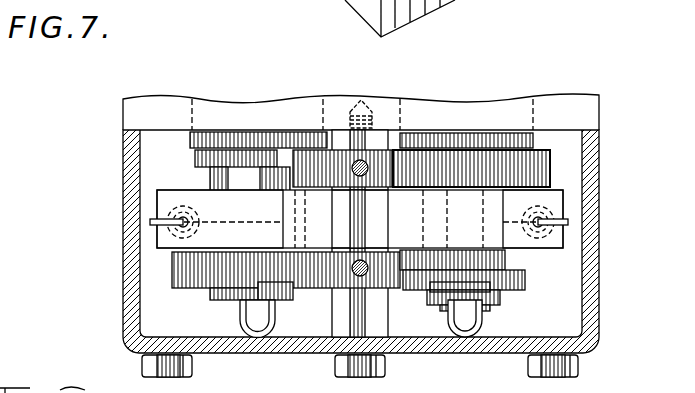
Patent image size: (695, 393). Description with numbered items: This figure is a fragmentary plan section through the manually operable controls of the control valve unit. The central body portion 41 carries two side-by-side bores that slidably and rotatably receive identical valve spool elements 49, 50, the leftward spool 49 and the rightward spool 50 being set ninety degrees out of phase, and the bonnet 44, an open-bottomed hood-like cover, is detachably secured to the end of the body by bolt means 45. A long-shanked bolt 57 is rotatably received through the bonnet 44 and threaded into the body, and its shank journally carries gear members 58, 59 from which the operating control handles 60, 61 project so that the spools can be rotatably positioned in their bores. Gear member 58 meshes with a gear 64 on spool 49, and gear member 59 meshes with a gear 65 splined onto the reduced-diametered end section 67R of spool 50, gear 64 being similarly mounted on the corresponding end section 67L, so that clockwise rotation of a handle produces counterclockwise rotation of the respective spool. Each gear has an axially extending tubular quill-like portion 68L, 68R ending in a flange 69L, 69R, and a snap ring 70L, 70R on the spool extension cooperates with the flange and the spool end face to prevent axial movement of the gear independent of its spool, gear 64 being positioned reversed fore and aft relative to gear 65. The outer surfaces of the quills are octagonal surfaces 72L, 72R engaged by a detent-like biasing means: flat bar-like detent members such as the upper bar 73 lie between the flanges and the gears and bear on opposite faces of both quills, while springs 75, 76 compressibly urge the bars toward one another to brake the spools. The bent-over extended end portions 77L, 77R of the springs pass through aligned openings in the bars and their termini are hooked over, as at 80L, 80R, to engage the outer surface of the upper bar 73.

The central body portion 41 is at (123, 110).
The bonnet 44 is at (213, 183).
The bolt means 45 is at (172, 377).
The valve spool element 49 is at (181, 136).
The valve spool element 50 is at (544, 136).
The long-shanked bolt 57 is at (367, 377).
The gear member 58 is at (375, 233).
The gear member 59 is at (398, 168).
The operating control handle 60 is at (360, 277).
The operating control handle 61 is at (356, 162).
The gear 64 is at (173, 267).
The gear 65 is at (552, 167).
The reduced-diametered end section 67L is at (218, 300).
The reduced-diametered end section 67R is at (490, 300).
The quill-like portion 68L is at (213, 170).
The quill-like portion 68R is at (507, 260).
The flange 69L is at (197, 157).
The flange 69R is at (530, 292).
The snap ring 70L is at (213, 292).
The snap ring 70R is at (512, 292).
The octagonal surface 72L is at (160, 192).
The octagonal surface 72R is at (527, 278).
The detent member 73 is at (558, 198).
The spring 75 is at (160, 230).
The spring 76 is at (567, 202).
The bent-over end portion 77L is at (160, 260).
The bent-over end portion 77R is at (553, 245).
The hooked terminus 80L is at (157, 212).
The hooked terminus 80R is at (568, 222).